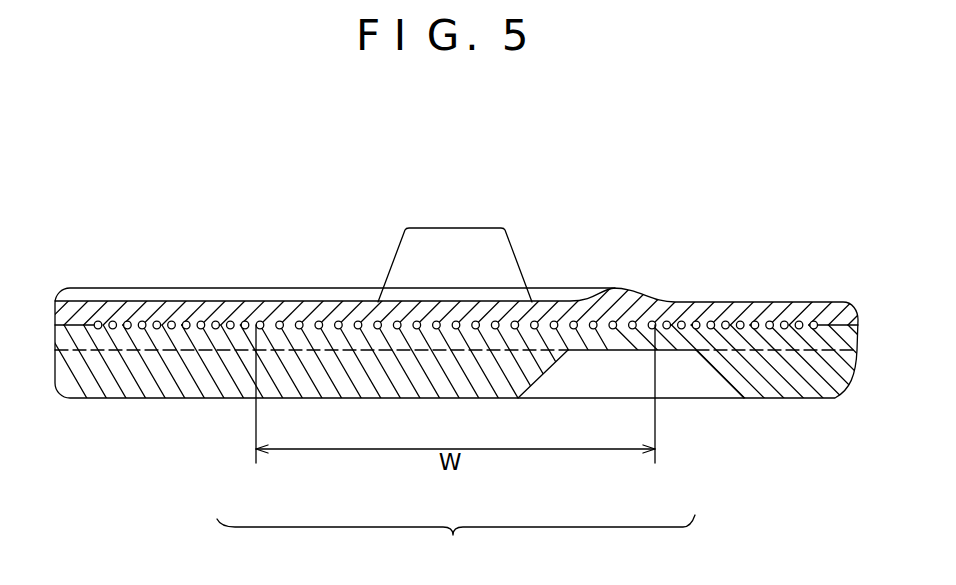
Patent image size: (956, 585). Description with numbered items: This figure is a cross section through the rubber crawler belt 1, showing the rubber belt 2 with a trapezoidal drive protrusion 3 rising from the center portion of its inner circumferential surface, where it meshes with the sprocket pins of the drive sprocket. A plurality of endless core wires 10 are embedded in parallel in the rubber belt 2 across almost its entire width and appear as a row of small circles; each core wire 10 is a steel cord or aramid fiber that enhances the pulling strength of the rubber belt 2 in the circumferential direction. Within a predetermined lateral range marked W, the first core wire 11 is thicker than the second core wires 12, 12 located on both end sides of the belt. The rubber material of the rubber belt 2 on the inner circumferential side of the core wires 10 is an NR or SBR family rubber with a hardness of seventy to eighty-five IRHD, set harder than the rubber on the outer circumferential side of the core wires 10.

The rubber crawler belt 1 is at (365, 205).
The rubber belt 2 is at (182, 307).
The drive protrusion 3 is at (477, 240).
The core wire 10 is at (456, 541).
The first core wire 11 is at (356, 329).
The second core wire 12 is at (186, 329).